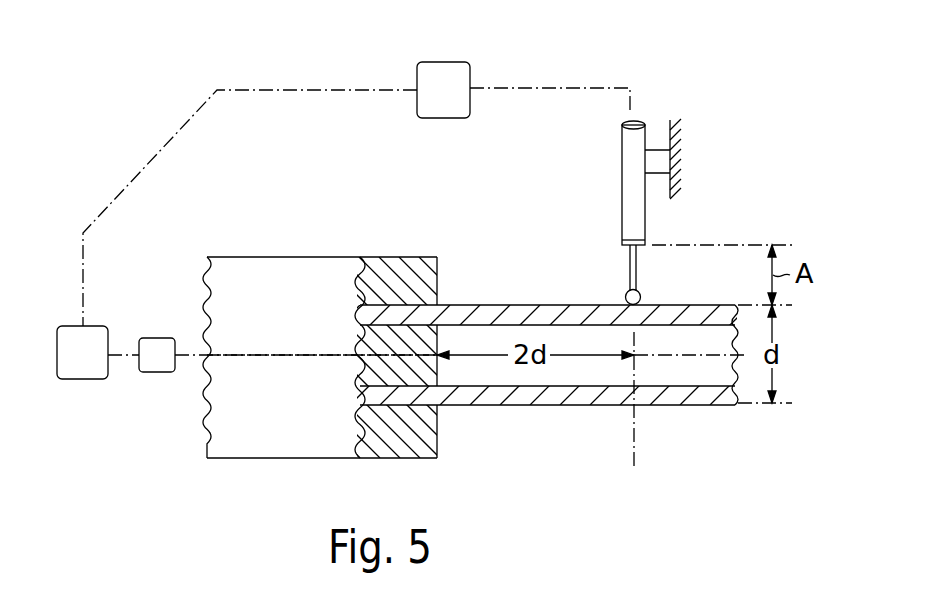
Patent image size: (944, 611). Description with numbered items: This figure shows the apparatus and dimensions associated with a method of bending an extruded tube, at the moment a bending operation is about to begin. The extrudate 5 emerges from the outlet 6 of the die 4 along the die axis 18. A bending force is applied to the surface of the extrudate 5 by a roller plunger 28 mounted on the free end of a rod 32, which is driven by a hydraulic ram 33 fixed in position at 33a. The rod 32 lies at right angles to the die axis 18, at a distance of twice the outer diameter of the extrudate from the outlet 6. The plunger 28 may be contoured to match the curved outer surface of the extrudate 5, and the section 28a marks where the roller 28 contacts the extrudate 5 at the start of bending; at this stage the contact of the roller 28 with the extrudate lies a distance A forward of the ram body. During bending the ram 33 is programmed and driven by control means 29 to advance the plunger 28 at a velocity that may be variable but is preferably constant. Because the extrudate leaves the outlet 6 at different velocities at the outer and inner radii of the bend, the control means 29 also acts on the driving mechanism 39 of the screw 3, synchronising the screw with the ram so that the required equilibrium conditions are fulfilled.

The screw 3 is at (157, 338).
The die 4 is at (302, 445).
The extrudate 5 is at (568, 405).
The outlet 6 is at (437, 437).
The die axis 18 is at (273, 355).
The roller plunger 28 is at (626, 292).
The section where the roller contacted the extrudate 28a is at (637, 455).
The control means 29 is at (437, 62).
The rod 32 is at (637, 268).
The hydraulic ram 33 is at (622, 180).
The fixed position 33a is at (652, 148).
The driving mechanism 39 is at (83, 379).